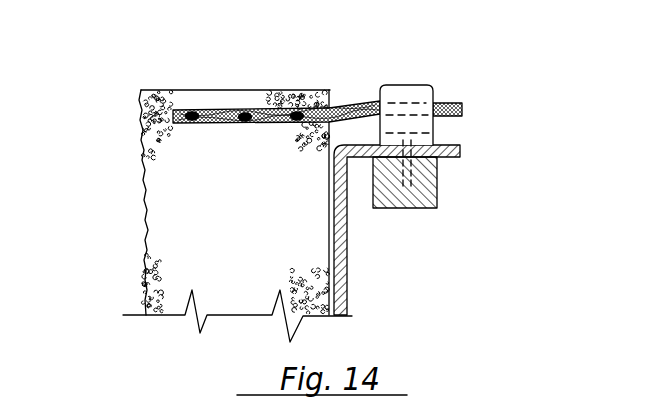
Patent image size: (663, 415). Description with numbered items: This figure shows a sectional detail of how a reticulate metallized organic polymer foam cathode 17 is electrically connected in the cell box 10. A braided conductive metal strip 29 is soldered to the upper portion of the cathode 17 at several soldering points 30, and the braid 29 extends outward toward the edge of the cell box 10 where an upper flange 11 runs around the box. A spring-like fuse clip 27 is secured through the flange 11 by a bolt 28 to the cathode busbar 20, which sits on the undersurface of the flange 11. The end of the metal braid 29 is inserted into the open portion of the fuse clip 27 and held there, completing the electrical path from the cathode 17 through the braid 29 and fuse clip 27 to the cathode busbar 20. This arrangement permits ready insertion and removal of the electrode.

The cell box 10 is at (347, 302).
The upper flange 11 is at (460, 147).
The reticulate metallized organic polymer foam cathode 17 is at (157, 180).
The cathode busbar 20 is at (437, 198).
The fuse clip 27 is at (430, 83).
The bolt 28 is at (408, 183).
The braided conductive metal strip 29 is at (460, 108).
The soldering point 30 is at (273, 90).